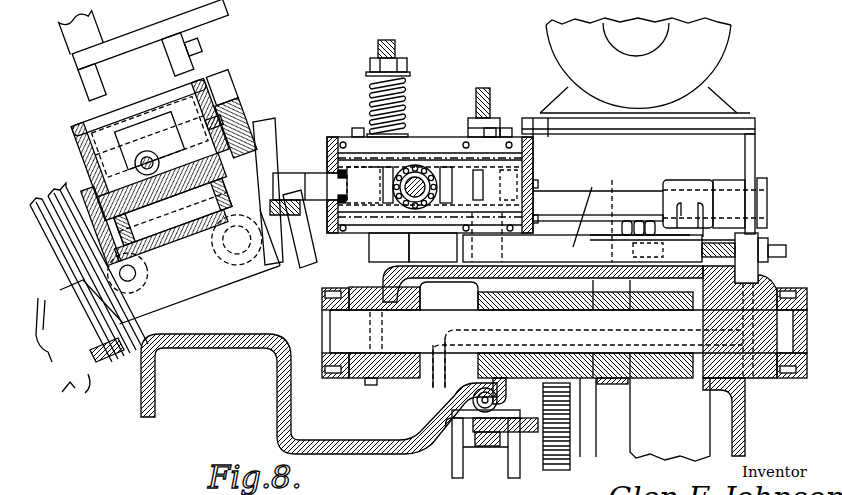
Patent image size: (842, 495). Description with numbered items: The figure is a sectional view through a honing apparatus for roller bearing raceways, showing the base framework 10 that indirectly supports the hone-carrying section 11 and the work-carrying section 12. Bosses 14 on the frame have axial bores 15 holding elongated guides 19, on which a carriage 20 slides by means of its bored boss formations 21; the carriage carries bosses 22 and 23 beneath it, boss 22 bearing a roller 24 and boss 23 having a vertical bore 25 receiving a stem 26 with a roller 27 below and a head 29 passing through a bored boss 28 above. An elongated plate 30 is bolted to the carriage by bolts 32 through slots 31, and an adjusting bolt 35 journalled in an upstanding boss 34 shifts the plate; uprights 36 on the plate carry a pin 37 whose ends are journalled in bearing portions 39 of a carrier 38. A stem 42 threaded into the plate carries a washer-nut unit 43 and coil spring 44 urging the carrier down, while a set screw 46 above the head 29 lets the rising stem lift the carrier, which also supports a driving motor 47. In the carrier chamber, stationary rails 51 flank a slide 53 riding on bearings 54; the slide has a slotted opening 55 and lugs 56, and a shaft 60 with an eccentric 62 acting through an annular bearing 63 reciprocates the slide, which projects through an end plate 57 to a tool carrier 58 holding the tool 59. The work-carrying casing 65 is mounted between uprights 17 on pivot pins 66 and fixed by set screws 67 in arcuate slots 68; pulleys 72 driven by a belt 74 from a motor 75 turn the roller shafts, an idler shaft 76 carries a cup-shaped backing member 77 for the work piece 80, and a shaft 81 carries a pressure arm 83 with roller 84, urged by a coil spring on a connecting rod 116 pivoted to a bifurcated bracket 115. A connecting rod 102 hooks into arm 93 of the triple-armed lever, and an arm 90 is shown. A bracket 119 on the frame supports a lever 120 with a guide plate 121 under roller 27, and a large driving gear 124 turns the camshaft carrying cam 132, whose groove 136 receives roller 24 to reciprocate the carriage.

The base framework 10 is at (319, 400).
The hone-carrying section 11 is at (430, 169).
The work-carrying section 12 is at (173, 191).
The bosses 14 is at (670, 419).
The axial bores 15 is at (507, 392).
The uprights 17 is at (280, 316).
The elongated guide 19 is at (428, 350).
The carriage 20 is at (558, 262).
The boss formations 21 is at (356, 378).
The boss 22 is at (630, 319).
The boss 23 is at (505, 325).
The roller 24 is at (620, 385).
The vertical bore 25 is at (476, 296).
The stem 26 is at (497, 398).
The roller 27 is at (449, 425).
The bored boss 28 is at (510, 248).
The head 29 is at (470, 250).
The elongated plate 30 is at (586, 205).
The elongated slots 31 is at (612, 213).
The bolts 32 is at (634, 220).
The upstanding boss 34 is at (752, 242).
The adjusting bolt 35 is at (786, 252).
The upright 36 is at (670, 180).
The pin 37 is at (644, 205).
The carrier 38 is at (732, 118).
The bearing portions 39 is at (727, 188).
The stem 42 is at (388, 40).
The washer-nut unit 43 is at (396, 58).
The coil spring 44 is at (404, 88).
The set screw 46 is at (491, 103).
The driving motor 47 is at (718, 48).
The rails 51 is at (432, 150).
The slide 53 is at (532, 170).
The bearings 54 is at (363, 185).
The slotted opening 55 is at (383, 186).
The lugs 56 is at (452, 186).
The end plate 57 is at (333, 137).
The tool carrier 58 is at (310, 167).
The tool 59 is at (283, 173).
The shaft 60 is at (405, 207).
The eccentric 62 is at (418, 207).
The annular bearing 63 is at (400, 165).
The casing 65 is at (135, 146).
The pivot pins 66 is at (237, 240).
The set screws 67 is at (127, 273).
The arcuate slots 68 is at (160, 305).
The driving pulley 72 is at (88, 390).
The belt 74 is at (46, 206).
The motor 75 is at (72, 50).
The idler shaft 76 is at (173, 212).
The backing member 77 is at (285, 178).
The work piece 80 is at (236, 128).
The shaft 81 is at (168, 166).
The pressure arm 83 is at (214, 122).
The roller 84 is at (222, 88).
The arm 90 is at (258, 119).
The arm 93 is at (41, 334).
The connecting rod 102 is at (66, 390).
The bifurcated bracket 115 is at (150, 136).
The connecting rod 116 is at (101, 225).
The upstanding bracket 119 is at (452, 467).
The lever 120 is at (484, 447).
The guide plate 121 is at (531, 433).
The driving gear 124 is at (556, 470).
The cam 132 is at (666, 380).
The annular circumferential groove 136 is at (625, 440).